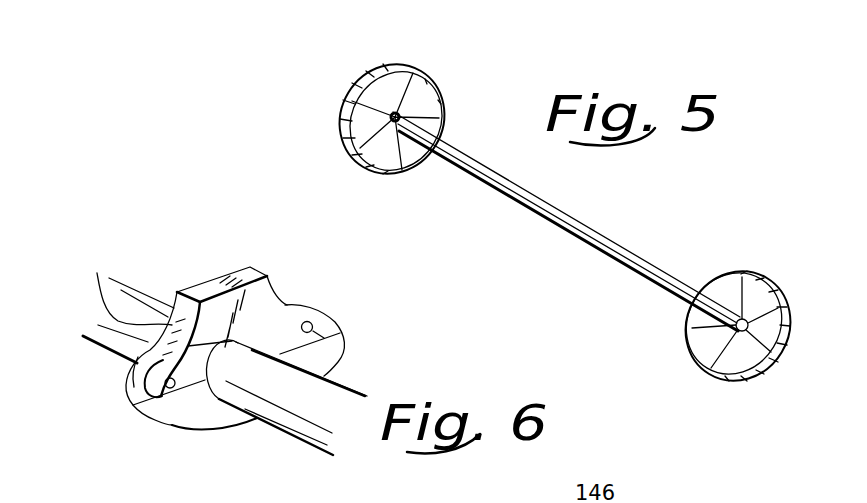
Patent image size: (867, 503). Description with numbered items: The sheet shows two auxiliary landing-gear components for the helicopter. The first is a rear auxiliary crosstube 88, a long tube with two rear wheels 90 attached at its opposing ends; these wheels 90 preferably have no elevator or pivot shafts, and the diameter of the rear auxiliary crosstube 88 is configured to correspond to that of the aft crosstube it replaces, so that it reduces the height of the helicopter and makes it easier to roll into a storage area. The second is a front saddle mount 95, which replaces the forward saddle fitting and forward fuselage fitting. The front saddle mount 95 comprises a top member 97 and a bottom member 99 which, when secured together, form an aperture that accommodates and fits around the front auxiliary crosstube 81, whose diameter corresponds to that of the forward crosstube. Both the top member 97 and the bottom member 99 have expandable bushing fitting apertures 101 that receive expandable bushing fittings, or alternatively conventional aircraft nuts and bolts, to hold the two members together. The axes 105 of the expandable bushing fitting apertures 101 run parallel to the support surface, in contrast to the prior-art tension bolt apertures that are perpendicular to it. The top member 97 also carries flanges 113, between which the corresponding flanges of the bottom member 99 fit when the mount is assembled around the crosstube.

In FIG. 6, the front auxiliary crosstube 81 is at (132, 284).
In FIG. 5, the rear auxiliary crosstube 88 is at (630, 252).
In FIG. 5, the rear wheels 90 is at (392, 65).
In FIG. 6, the front saddle mount 95 is at (250, 266).
In FIG. 6, the top member 97 is at (120, 285).
In FIG. 6, the bottom member 99 is at (183, 429).
In FIG. 6, the expandable bushing fitting apertures 101 is at (302, 323).
In FIG. 6, the axes 105 is at (362, 354).
In FIG. 6, the flanges 113 is at (128, 350).